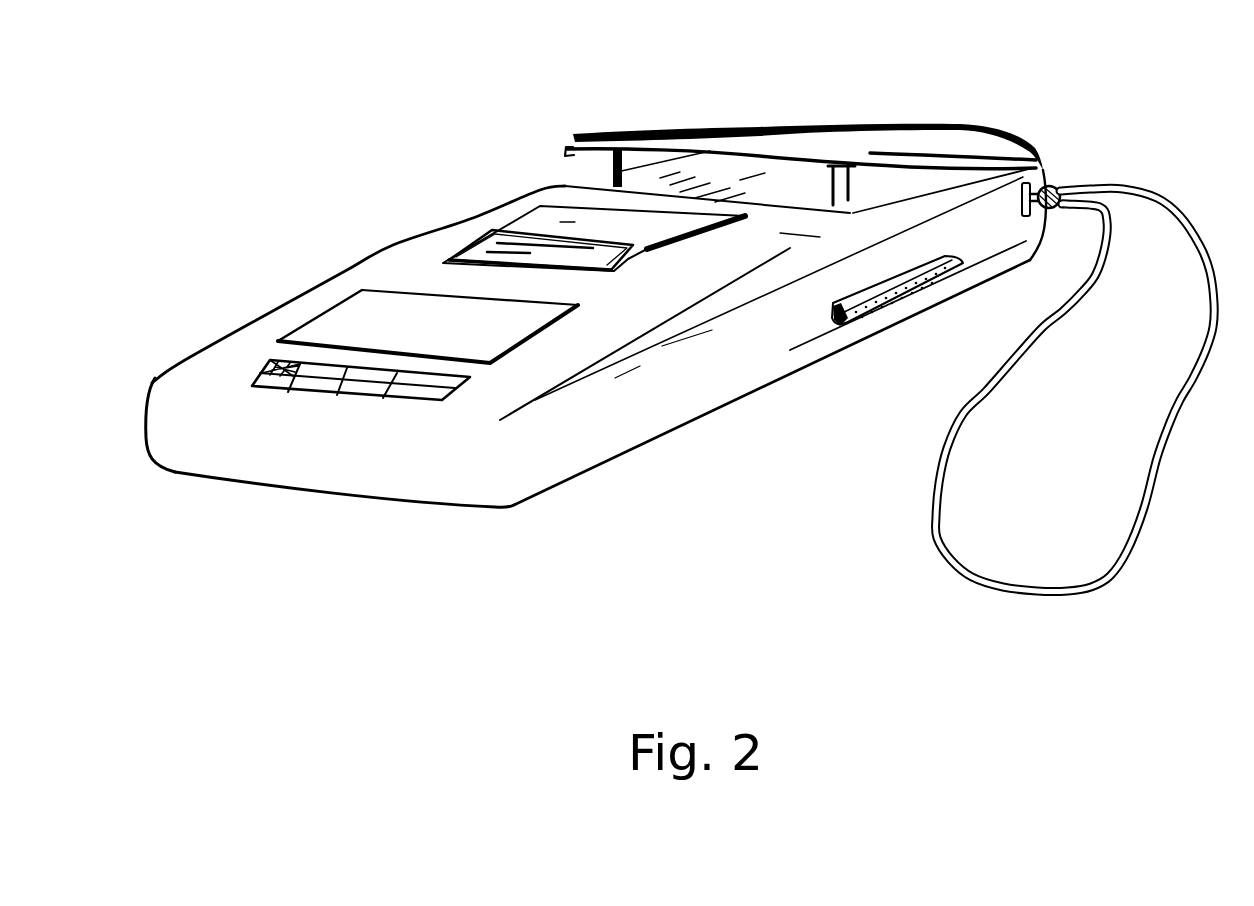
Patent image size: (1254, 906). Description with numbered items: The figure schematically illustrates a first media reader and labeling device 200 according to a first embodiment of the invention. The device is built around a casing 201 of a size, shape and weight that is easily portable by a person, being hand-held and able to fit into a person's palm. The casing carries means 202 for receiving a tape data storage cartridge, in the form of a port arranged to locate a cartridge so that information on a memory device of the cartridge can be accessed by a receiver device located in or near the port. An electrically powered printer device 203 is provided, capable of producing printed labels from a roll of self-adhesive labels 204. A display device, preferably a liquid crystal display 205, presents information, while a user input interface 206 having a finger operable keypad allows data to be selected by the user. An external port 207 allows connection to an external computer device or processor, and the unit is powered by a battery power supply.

The media reader and labeling device 200 is at (268, 584).
The casing 201 is at (603, 461).
The means for receiving a tape data storage cartridge 202 is at (610, 127).
The printer device 203 is at (527, 220).
The roll of self-adhesive labels 204 is at (467, 237).
The liquid crystal display 205 is at (355, 317).
The user input interface 206 is at (258, 373).
The external port 207 is at (877, 312).